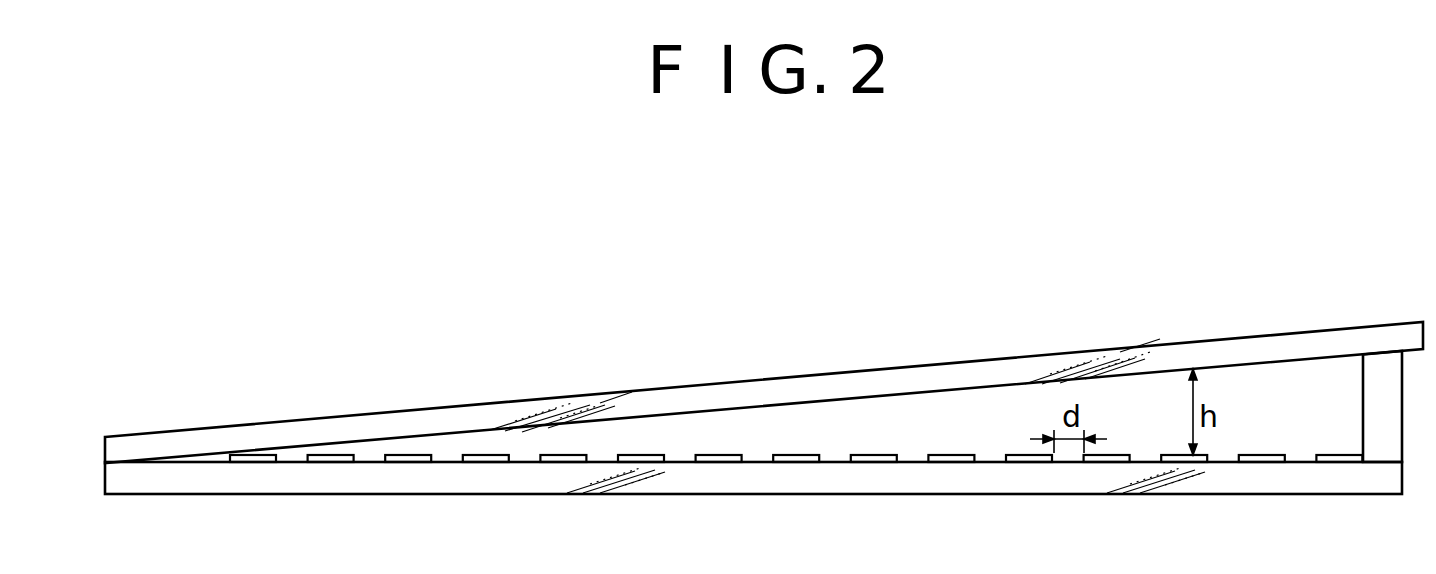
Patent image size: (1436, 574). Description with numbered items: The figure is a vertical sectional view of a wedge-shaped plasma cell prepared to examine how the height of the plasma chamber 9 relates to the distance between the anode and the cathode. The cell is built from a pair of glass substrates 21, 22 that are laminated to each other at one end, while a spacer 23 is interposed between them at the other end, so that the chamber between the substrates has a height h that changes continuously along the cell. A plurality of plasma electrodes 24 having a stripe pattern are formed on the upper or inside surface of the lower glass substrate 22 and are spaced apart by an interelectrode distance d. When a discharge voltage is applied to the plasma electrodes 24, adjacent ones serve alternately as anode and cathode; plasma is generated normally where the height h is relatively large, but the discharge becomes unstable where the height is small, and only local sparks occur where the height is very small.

The plasma chamber 9 is at (790, 427).
The glass substrate 21 is at (396, 411).
The glass substrate 22 is at (430, 495).
The spacer 23 is at (1365, 392).
The plasma electrodes 24 is at (950, 464).